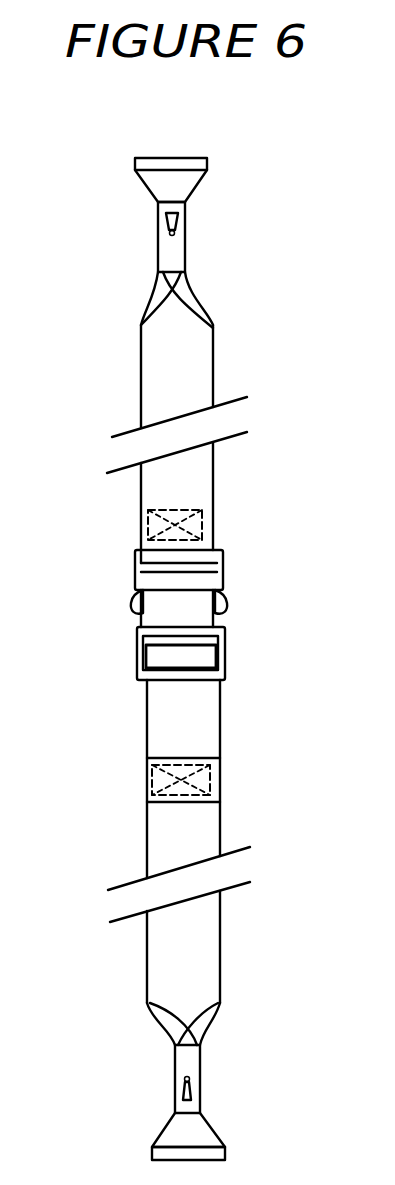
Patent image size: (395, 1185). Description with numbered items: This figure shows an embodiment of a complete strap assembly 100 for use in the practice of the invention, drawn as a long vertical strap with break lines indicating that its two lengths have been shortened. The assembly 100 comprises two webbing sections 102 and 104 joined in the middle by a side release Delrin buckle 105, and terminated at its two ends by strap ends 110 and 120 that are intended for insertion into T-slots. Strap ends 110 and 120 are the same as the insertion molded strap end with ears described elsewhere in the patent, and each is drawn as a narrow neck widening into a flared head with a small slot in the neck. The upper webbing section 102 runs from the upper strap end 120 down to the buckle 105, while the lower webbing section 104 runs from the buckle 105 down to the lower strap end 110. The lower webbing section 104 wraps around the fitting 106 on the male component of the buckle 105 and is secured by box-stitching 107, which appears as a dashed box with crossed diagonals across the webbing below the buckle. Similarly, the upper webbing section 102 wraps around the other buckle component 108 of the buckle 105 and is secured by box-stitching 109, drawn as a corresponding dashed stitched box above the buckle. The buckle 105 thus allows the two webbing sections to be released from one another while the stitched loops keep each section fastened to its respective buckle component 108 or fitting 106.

The complete strap assembly 100 is at (146, 710).
The webbing section 102 is at (202, 363).
The webbing section 104 is at (213, 953).
The side release Delrin buckle 105 is at (225, 627).
The fitting 106 is at (225, 647).
The box-stitching 107 is at (210, 773).
The buckle insert 108 is at (222, 551).
The box-stitching 109 is at (148, 522).
The strap end 110 is at (200, 1085).
The strap end 120 is at (185, 240).